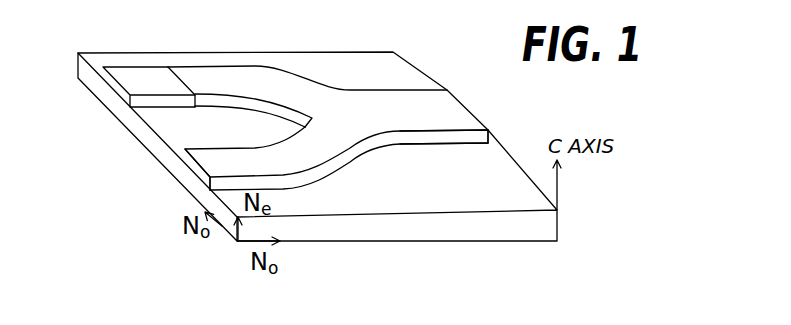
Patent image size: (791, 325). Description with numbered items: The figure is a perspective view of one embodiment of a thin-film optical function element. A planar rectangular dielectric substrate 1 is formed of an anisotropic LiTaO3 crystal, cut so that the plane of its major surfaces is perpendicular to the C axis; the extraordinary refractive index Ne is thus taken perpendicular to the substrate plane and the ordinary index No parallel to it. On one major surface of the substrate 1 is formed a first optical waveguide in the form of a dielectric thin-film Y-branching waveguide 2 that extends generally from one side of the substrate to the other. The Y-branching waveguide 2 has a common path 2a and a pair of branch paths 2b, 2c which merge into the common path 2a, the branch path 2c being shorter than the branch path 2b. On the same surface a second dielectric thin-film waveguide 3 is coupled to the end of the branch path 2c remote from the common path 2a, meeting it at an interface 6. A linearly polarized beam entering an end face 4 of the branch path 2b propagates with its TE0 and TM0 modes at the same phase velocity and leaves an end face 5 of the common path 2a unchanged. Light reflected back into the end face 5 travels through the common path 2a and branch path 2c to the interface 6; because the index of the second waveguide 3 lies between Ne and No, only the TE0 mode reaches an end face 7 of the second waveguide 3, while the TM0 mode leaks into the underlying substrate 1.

The dielectric substrate 1 is at (462, 232).
The Y-branching waveguide 2 is at (328, 100).
The common path 2a is at (440, 97).
The branch path 2b is at (307, 147).
The branch path 2c is at (263, 87).
The second optical waveguide 3 is at (145, 75).
The end face 4 is at (196, 166).
The end face 5 is at (468, 110).
The interface 6 is at (188, 80).
The end face 7 is at (113, 85).